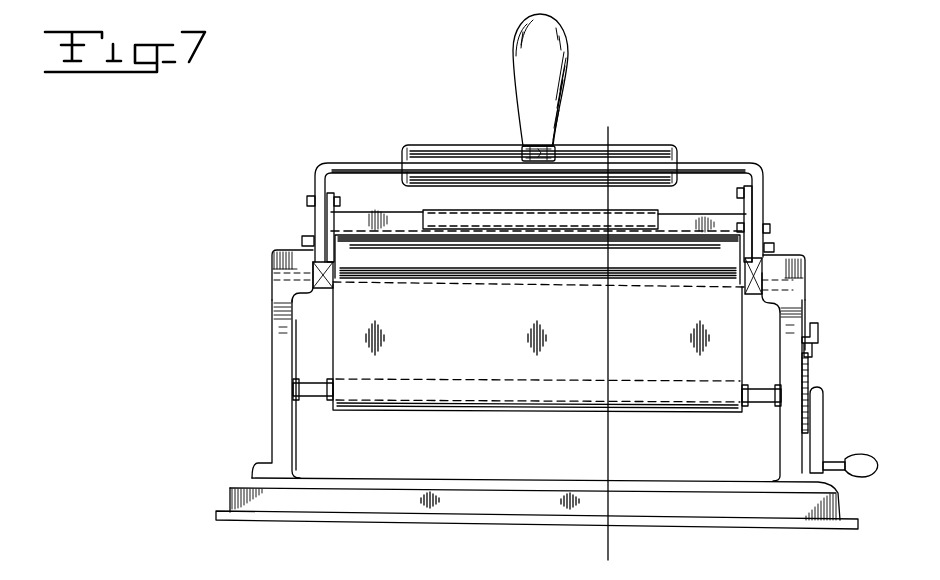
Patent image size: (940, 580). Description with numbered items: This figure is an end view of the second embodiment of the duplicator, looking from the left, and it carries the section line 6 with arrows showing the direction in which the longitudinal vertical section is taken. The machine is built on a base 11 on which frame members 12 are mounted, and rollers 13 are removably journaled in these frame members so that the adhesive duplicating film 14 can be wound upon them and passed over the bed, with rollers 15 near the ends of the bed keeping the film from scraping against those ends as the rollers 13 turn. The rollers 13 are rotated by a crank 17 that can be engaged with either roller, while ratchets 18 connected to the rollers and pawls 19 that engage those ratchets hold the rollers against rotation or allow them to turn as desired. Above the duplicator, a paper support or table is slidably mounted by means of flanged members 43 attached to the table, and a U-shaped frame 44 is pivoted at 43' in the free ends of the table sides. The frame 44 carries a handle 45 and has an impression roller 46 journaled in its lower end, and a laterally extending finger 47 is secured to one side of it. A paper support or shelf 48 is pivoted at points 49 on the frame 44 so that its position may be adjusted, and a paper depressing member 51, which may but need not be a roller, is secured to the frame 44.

The section line 6 is at (612, 130).
The base 11 is at (230, 497).
The frame members 12 is at (275, 358).
The rollers 13 is at (319, 383).
The adhesive duplicating film 14 is at (408, 393).
The rollers 15 is at (318, 288).
The crank 17 is at (878, 463).
The ratchets 18 is at (807, 427).
The pawls 19 is at (820, 339).
The flanged members 43 is at (543, 264).
The pivot 43' is at (542, 232).
The U-shaped frame 44 is at (336, 165).
The handle 45 is at (518, 77).
The impression roller 46 is at (457, 265).
The laterally extending finger 47 is at (747, 192).
The paper support or shelf 48 is at (357, 232).
The pivot points 49 is at (311, 220).
The paper depressing member 51 is at (433, 148).